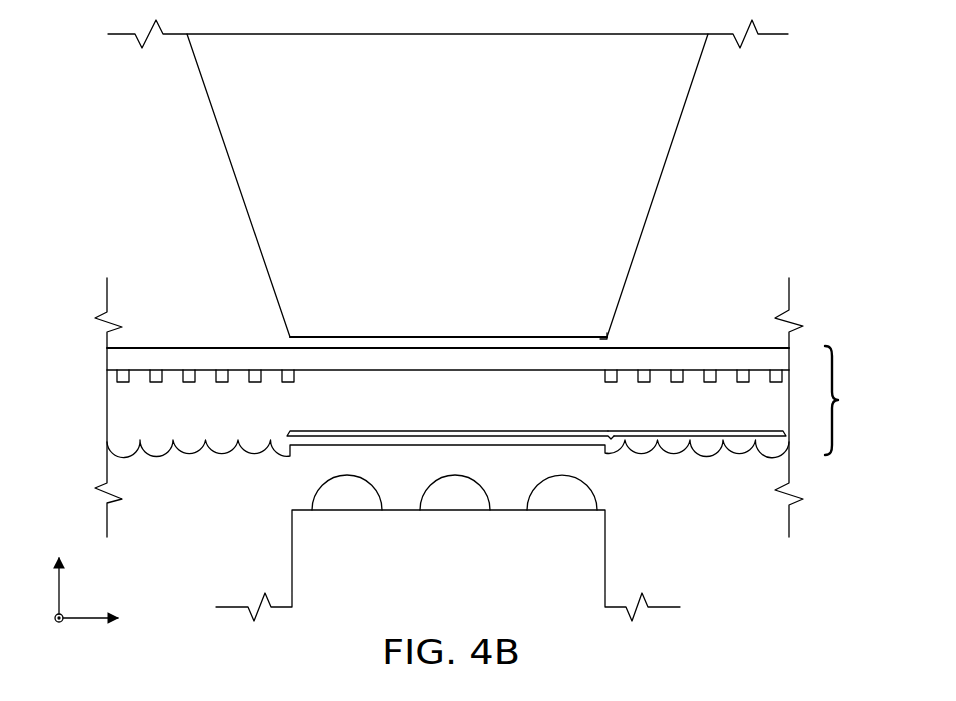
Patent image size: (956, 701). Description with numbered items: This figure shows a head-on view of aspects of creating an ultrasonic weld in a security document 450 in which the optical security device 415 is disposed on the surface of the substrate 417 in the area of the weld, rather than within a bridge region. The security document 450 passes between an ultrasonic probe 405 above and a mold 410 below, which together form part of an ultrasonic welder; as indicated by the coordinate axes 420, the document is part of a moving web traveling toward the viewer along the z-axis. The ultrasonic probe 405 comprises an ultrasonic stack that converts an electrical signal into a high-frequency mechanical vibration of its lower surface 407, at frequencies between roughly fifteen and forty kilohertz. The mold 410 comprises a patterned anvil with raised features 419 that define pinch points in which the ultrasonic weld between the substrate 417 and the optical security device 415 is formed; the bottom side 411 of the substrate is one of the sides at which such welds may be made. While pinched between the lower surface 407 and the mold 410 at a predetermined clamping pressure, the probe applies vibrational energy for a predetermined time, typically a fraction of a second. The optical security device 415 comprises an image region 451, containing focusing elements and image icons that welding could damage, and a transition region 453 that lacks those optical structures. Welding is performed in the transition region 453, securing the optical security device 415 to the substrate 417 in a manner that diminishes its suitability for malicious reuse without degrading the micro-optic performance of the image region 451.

The ultrasonic probe 405 is at (660, 183).
The lower surface 407 is at (366, 336).
The bottom side 411 is at (600, 340).
The substrate 417 is at (96, 357).
The optical security device 415 is at (96, 409).
The transition region 453 is at (456, 431).
The image region 451 is at (706, 431).
The security document 450 is at (854, 400).
The raised features 419 is at (592, 496).
The mold 410 is at (292, 560).
The coordinate axes 420 is at (86, 622).